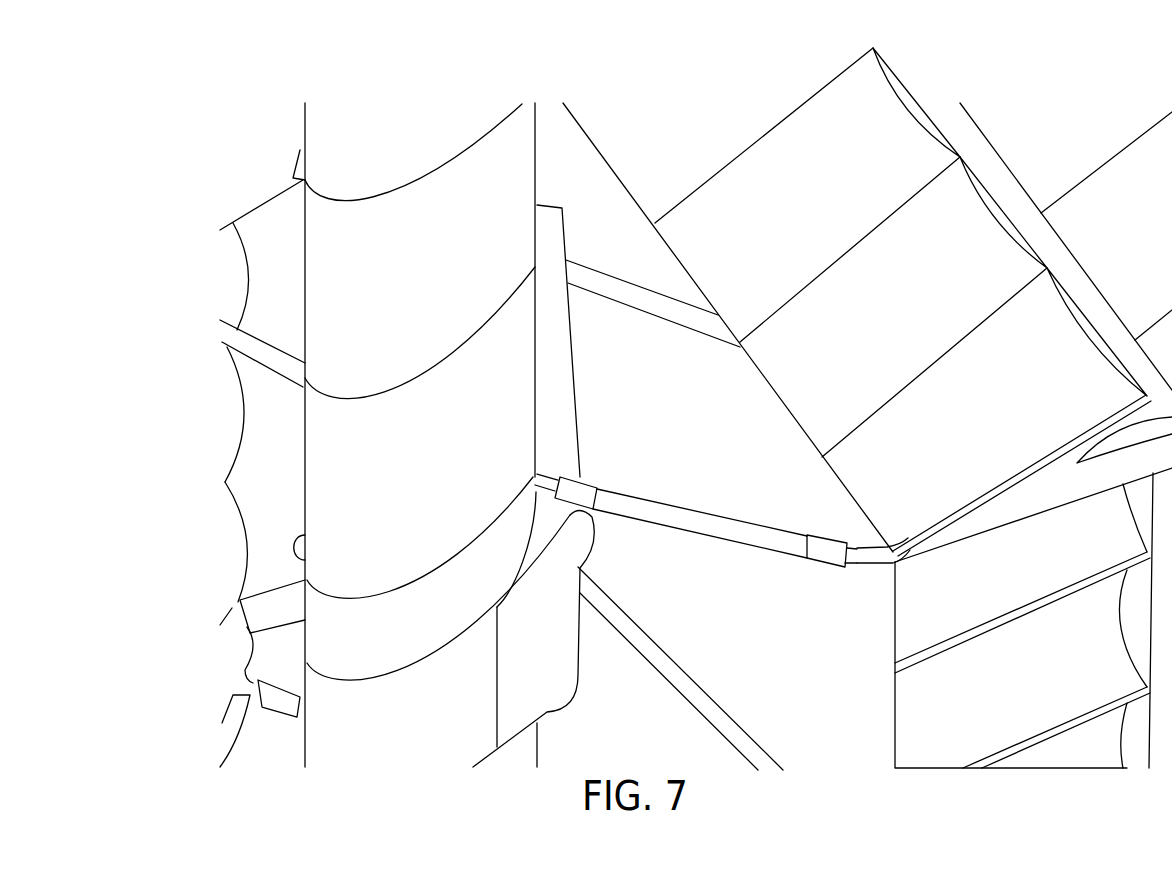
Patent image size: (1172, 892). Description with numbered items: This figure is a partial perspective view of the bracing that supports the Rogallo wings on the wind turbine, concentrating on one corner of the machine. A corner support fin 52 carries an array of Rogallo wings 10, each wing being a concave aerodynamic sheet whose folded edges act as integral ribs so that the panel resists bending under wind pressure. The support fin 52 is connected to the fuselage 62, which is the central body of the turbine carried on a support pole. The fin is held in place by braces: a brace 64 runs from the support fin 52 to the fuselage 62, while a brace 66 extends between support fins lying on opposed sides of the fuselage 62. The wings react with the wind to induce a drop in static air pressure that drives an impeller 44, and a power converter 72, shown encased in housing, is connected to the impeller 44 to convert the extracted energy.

The Rogallo wing 10 is at (776, 205).
The impeller 44 is at (650, 640).
The support fin 52 is at (1036, 497).
The fuselage 62 is at (391, 289).
The brace 64 is at (697, 505).
The brace 66 is at (607, 297).
The power converter 72 is at (529, 652).